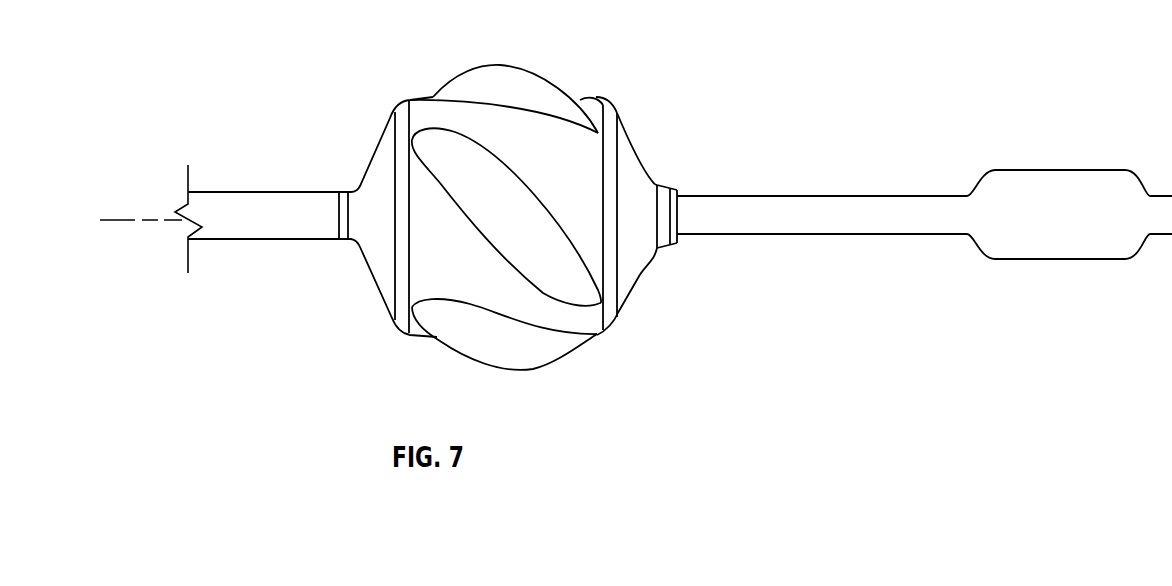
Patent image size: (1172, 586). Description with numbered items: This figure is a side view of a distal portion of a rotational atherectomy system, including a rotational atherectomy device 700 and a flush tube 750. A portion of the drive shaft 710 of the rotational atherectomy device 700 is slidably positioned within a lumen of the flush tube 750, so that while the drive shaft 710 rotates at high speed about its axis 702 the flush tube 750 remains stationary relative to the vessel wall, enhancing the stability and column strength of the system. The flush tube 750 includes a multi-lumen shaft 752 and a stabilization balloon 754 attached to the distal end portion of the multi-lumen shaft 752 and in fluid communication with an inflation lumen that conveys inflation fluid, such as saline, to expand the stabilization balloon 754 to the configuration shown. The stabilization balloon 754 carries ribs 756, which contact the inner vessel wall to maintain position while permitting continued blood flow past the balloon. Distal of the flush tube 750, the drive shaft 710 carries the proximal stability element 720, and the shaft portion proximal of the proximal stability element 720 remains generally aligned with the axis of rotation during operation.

The rotational atherectomy device 700 is at (924, 208).
The axis 702 is at (150, 222).
The drive shaft 710 is at (866, 250).
The proximal stability element 720 is at (1045, 170).
The flush tube 750 is at (411, 222).
The multi-lumen shaft 752 is at (277, 240).
The stabilization balloon 754 is at (594, 82).
The ribs 756 is at (503, 68).